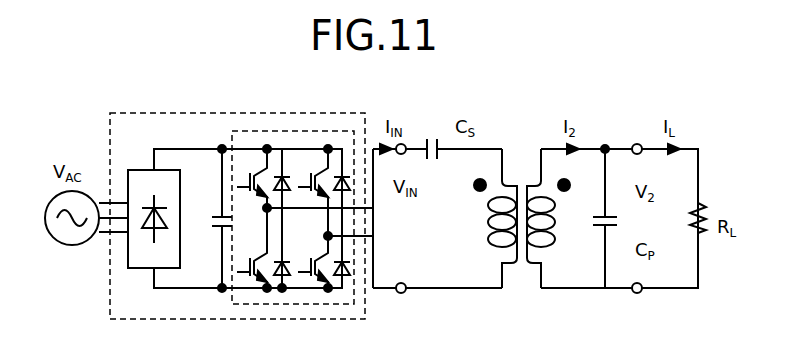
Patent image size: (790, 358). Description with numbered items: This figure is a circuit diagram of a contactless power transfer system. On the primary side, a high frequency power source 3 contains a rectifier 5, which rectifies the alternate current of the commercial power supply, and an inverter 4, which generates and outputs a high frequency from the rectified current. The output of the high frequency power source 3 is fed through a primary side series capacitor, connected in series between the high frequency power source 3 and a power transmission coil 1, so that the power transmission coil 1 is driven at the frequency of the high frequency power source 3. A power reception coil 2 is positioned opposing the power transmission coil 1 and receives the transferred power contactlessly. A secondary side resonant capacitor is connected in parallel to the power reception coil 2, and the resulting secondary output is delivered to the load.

The power transmission coil 1 is at (514, 179).
The power reception coil 2 is at (530, 179).
The high frequency power source 3 is at (325, 113).
The inverter 4 is at (274, 131).
The rectifier 5 is at (142, 170).